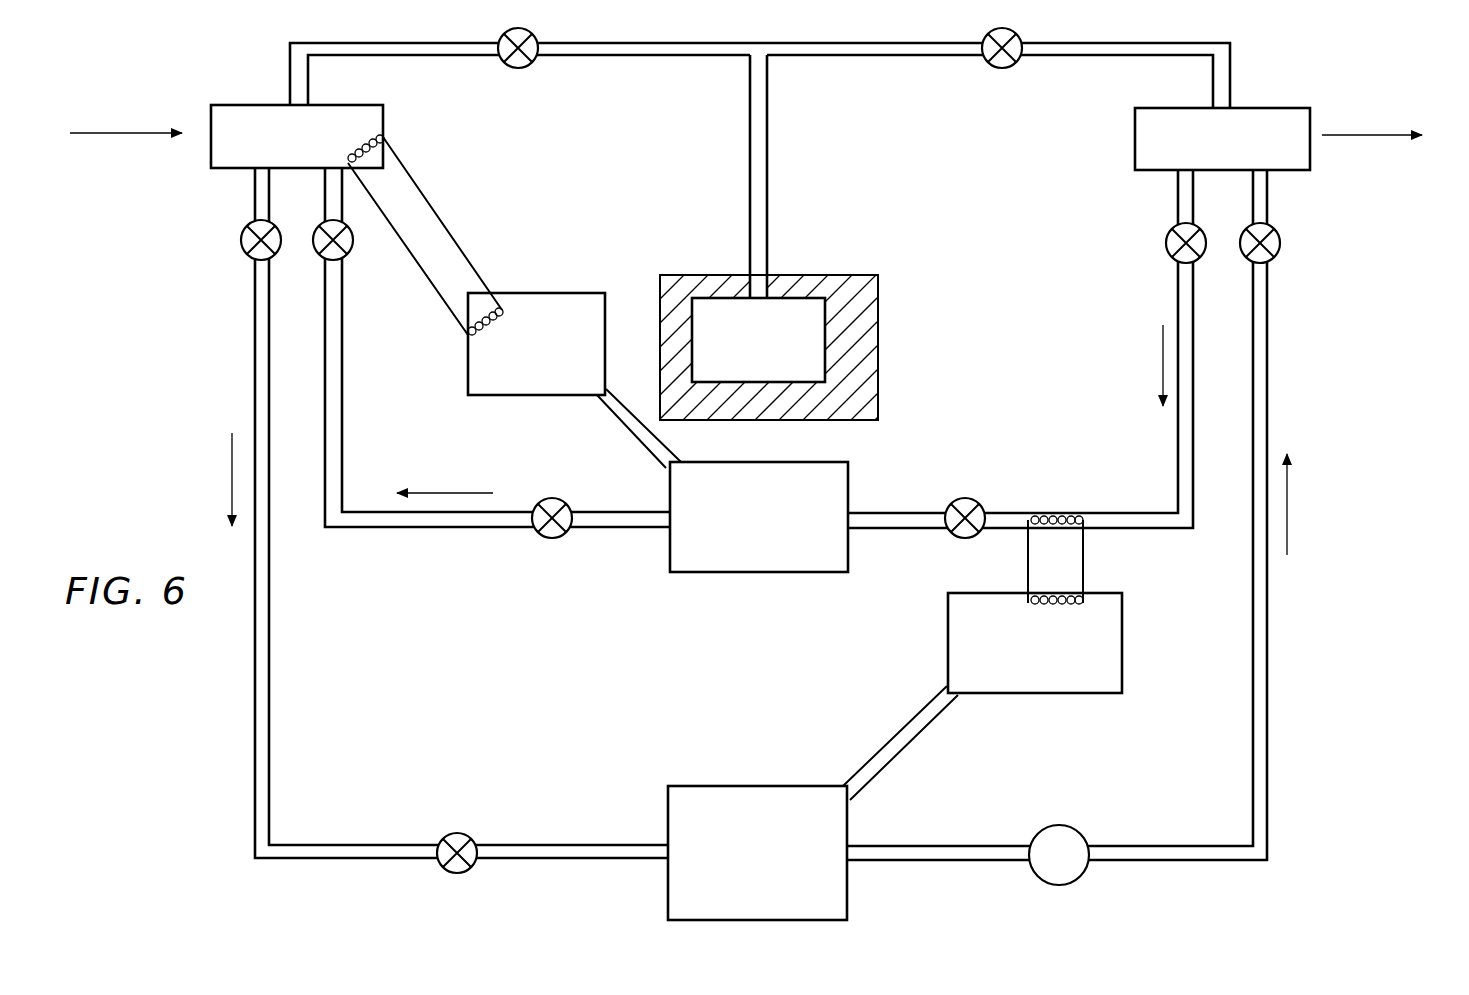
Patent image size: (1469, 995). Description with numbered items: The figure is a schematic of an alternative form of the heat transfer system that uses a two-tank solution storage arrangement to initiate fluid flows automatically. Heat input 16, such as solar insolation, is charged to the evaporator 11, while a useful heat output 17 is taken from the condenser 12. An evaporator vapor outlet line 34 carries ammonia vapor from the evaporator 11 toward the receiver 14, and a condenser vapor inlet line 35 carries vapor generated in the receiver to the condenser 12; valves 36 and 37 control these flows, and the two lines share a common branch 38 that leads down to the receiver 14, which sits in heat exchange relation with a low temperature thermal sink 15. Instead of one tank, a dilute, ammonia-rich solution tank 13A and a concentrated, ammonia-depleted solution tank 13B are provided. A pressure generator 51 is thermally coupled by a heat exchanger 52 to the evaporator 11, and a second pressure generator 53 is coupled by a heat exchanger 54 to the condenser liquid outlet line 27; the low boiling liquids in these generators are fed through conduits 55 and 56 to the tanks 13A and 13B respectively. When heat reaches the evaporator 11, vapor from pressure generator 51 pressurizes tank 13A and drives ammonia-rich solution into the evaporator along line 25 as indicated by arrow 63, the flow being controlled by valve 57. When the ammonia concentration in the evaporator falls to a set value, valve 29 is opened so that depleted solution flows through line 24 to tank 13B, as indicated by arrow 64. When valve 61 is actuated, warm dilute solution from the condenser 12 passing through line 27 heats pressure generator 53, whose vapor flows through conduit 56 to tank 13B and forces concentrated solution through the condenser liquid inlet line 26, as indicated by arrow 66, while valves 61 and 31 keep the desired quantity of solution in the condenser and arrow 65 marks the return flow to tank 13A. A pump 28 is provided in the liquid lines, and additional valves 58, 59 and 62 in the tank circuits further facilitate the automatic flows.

The evaporator 11 is at (300, 162).
The condenser 12 is at (1140, 120).
The dilute solution tank 13A is at (690, 578).
The concentrated solution tank 13B is at (670, 900).
The receiver 14 is at (770, 376).
The thermal sink 15 is at (700, 283).
The heat input 16 is at (74, 135).
The heat output 17 is at (1398, 132).
The line 24 is at (269, 666).
The conduit from evaporator to dilute solution tank 25 is at (342, 416).
The condenser liquid inlet line 26 is at (1268, 612).
The condenser liquid outlet line 27 is at (1178, 465).
The pump 28 is at (1040, 838).
The valve 29 is at (248, 256).
The valve 31 is at (1280, 240).
The evaporator vapor outlet line 34 is at (692, 46).
The condenser vapor inlet line 35 is at (884, 46).
The valve 36 is at (530, 66).
The valve 37 is at (1006, 66).
The common branch 38 is at (767, 107).
The pressure generator 51 is at (574, 298).
The heat exchanger 52 is at (425, 234).
The pressure generator 53 is at (950, 610).
The heat exchanger 54 is at (1068, 574).
The conduit 55 is at (618, 420).
The conduit 56 is at (880, 742).
The valve 57 is at (348, 256).
The valve 58 is at (556, 498).
The valve 59 is at (966, 500).
The valve 61 is at (1170, 240).
The valve 62 is at (462, 838).
The arrow 63 is at (468, 485).
The arrow 64 is at (232, 478).
The flow direction arrow 65 is at (1163, 363).
The arrow 66 is at (1288, 500).